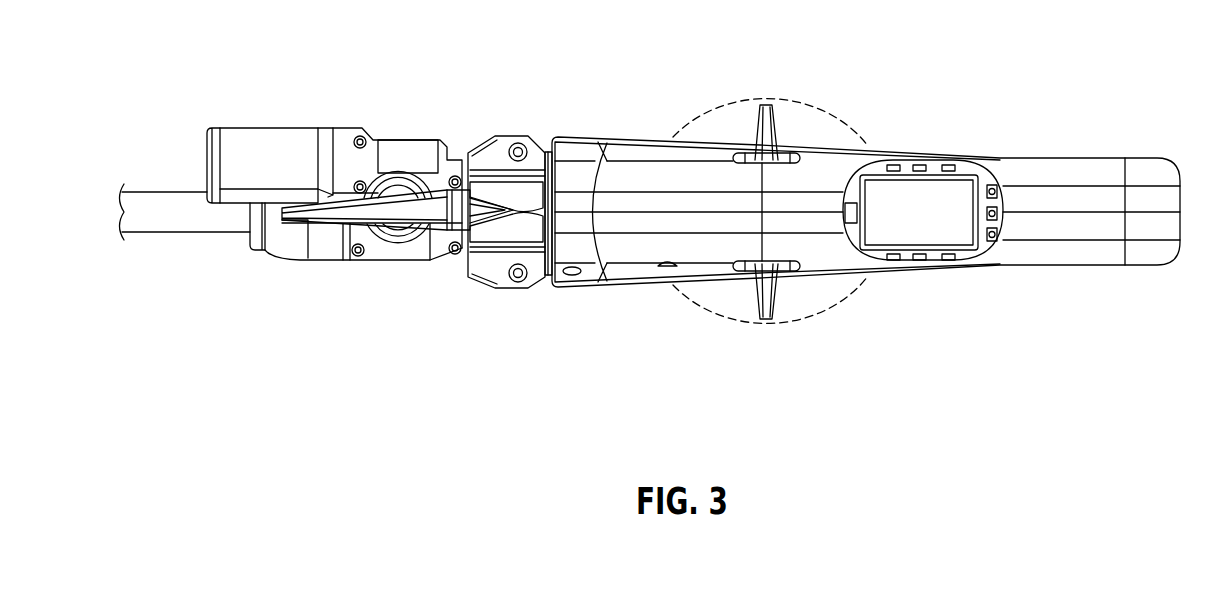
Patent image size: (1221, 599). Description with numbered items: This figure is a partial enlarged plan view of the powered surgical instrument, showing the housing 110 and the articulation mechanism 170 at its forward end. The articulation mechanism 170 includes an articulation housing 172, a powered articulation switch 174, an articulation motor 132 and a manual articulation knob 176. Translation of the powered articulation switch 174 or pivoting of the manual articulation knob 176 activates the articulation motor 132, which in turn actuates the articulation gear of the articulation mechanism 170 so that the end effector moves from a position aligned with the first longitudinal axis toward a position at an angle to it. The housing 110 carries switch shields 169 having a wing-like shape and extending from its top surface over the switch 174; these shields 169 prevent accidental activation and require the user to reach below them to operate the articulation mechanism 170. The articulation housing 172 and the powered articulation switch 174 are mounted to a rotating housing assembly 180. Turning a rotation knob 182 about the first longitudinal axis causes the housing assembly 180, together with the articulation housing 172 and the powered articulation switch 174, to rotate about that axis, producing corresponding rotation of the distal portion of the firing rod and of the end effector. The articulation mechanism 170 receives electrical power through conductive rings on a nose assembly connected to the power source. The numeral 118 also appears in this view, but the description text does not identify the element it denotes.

The housing 110 is at (1033, 268).
The housing 118 is at (1038, 123).
The articulation motor 132 is at (243, 128).
The switch shields 169 is at (778, 106).
The articulation mechanism 170 is at (303, 100).
The articulation housing 172 is at (392, 263).
The powered articulation switch 174 is at (762, 118).
The manual articulation knob 176 is at (397, 205).
The rotating housing assembly 180 is at (459, 289).
The rotation knob 182 is at (508, 290).